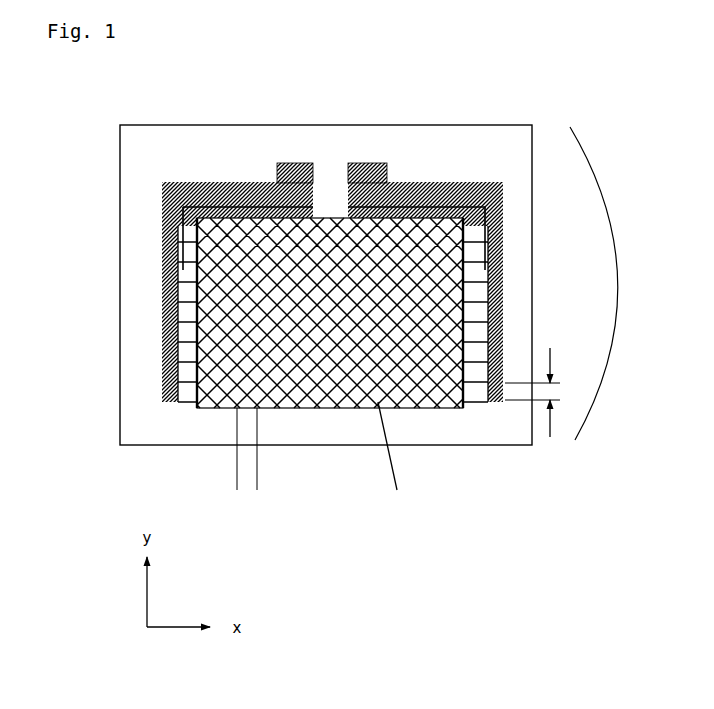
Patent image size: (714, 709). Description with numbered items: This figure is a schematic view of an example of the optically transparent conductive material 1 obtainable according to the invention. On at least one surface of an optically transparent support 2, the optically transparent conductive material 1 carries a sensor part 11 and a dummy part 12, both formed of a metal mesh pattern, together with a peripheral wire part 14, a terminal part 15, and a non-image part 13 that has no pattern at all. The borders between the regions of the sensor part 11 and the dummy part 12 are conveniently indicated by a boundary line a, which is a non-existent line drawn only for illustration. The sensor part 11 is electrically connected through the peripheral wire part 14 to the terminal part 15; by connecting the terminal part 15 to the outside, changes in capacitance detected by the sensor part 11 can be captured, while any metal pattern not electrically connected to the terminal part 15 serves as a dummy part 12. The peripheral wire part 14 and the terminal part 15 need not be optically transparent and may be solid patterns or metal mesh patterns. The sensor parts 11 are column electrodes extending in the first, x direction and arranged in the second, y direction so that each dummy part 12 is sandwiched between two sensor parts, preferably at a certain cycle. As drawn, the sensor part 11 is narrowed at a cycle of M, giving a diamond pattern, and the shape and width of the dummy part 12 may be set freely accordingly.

The optically transparent conductive material 1 is at (612, 283).
The optically transparent support 2 is at (532, 125).
The sensor part 11 is at (210, 406).
The dummy part 12 is at (437, 400).
The non-image part 13 is at (345, 438).
The peripheral wire part 14 is at (220, 182).
The terminal part 15 is at (280, 163).
The boundary line a is at (392, 456).
The cycle M is at (200, 472).